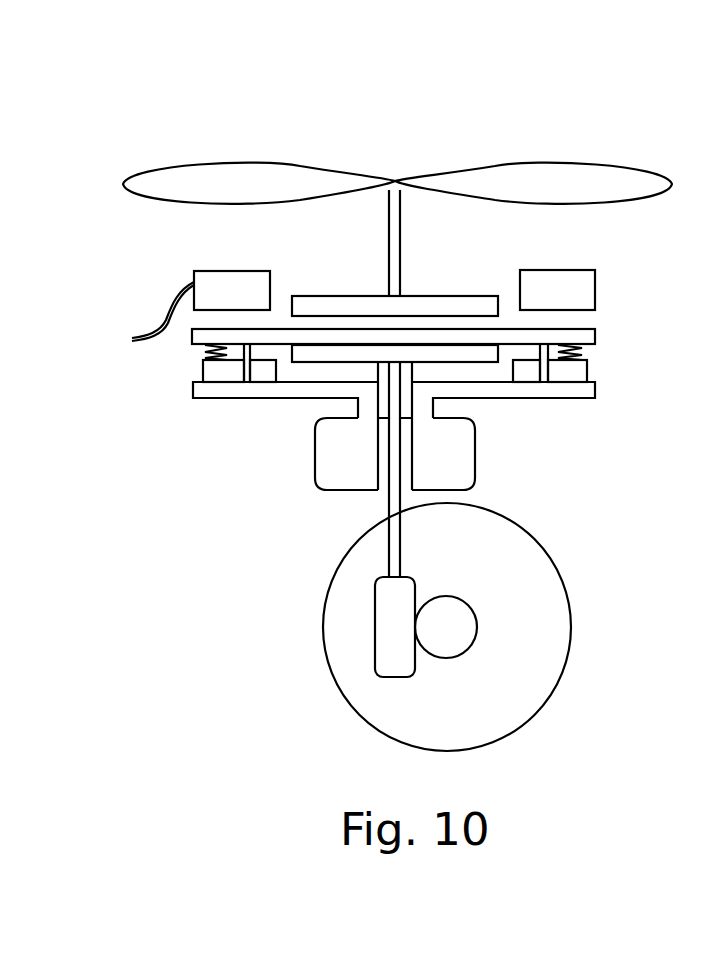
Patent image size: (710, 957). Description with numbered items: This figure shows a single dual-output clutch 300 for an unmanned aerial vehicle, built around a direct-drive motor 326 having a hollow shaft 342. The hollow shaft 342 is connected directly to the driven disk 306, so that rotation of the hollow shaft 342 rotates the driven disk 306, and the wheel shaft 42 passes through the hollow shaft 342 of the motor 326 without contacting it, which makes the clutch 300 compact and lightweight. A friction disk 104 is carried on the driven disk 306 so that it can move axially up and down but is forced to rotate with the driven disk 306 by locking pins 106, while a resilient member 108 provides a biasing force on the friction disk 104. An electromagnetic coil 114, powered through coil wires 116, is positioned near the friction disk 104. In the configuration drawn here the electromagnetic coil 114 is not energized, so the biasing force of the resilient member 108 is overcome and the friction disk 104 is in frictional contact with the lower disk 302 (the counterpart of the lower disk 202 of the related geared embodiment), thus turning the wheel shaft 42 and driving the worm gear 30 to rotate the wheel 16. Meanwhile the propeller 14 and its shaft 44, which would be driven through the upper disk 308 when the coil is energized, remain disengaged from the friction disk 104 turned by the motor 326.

The single dual-output clutch 300 is at (147, 126).
The propeller 14 is at (598, 172).
The shaft 44 is at (403, 245).
The upper disk 308 is at (470, 297).
The electromagnetic coil 114 is at (218, 271).
The coil wires 116 is at (157, 325).
The friction disk 104 is at (598, 333).
The lower disk 302 is at (293, 356).
The resilient member 108 is at (203, 348).
The locking pins 106 is at (252, 352).
The driven disk 306 is at (222, 400).
The lower disk 202 is at (483, 363).
The direct-drive motor 326 is at (315, 466).
The hollow shaft 342 is at (430, 452).
The wheel shaft 42 is at (388, 500).
The worm gear 30 is at (375, 612).
The wheel 16 is at (552, 692).